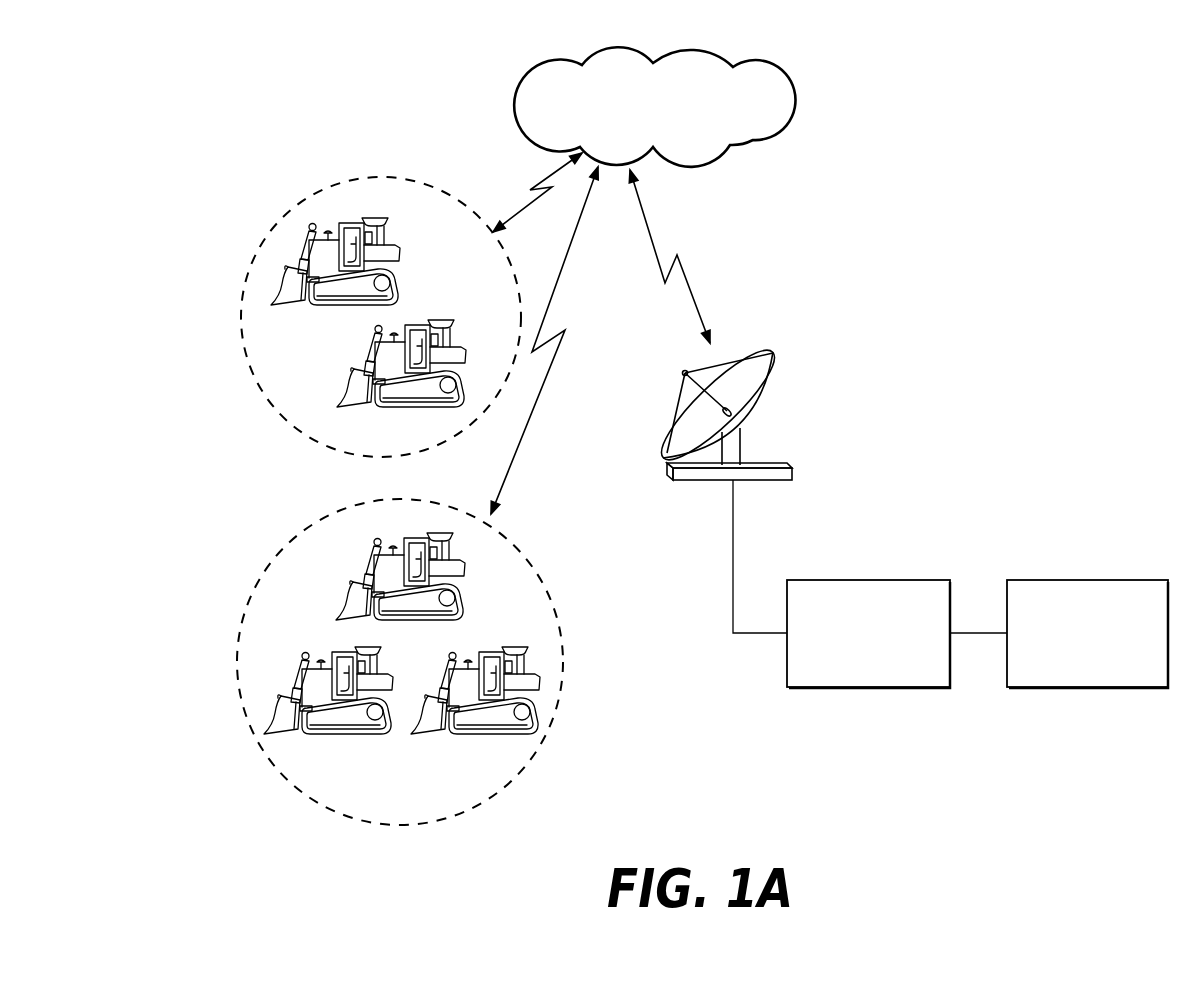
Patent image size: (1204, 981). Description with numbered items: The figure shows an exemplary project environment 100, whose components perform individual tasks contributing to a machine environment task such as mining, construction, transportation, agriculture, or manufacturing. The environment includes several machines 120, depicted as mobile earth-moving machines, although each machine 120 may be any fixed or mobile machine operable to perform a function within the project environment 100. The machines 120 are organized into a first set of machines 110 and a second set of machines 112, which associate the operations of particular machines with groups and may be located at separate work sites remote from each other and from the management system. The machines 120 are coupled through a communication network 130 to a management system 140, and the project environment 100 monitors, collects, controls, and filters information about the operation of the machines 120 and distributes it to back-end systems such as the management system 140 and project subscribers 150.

The project environment 100 is at (315, 121).
The first set of machines 110 is at (240, 300).
The second set of machines 112 is at (523, 557).
The machine 120 is at (375, 218).
The communication network 130 is at (790, 105).
The management system 140 is at (871, 580).
The project subscriber 150 is at (1090, 580).